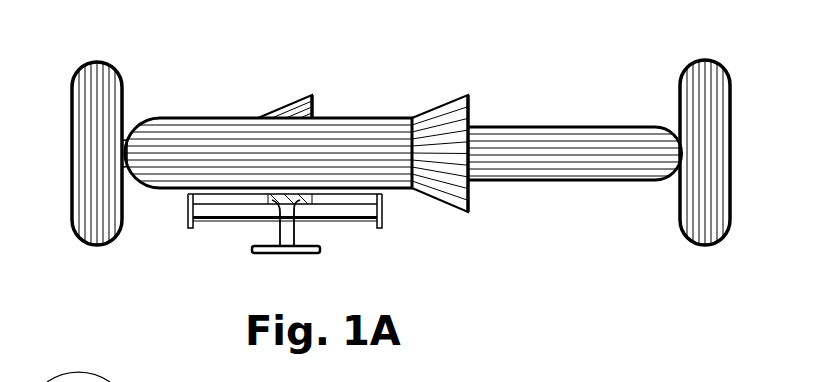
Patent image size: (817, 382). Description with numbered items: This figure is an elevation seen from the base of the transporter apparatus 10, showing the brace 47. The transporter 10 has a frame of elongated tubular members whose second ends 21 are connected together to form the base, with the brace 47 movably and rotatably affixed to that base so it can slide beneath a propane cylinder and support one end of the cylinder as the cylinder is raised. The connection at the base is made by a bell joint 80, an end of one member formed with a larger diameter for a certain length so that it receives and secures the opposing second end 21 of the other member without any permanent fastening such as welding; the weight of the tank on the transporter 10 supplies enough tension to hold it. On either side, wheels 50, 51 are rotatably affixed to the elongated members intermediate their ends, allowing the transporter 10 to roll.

The transporter apparatus 10 is at (610, 103).
The second end 21 is at (470, 110).
The brace 47 is at (242, 241).
The wheel 50 is at (72, 118).
The wheel 51 is at (730, 123).
The bell joint 80 is at (447, 200).